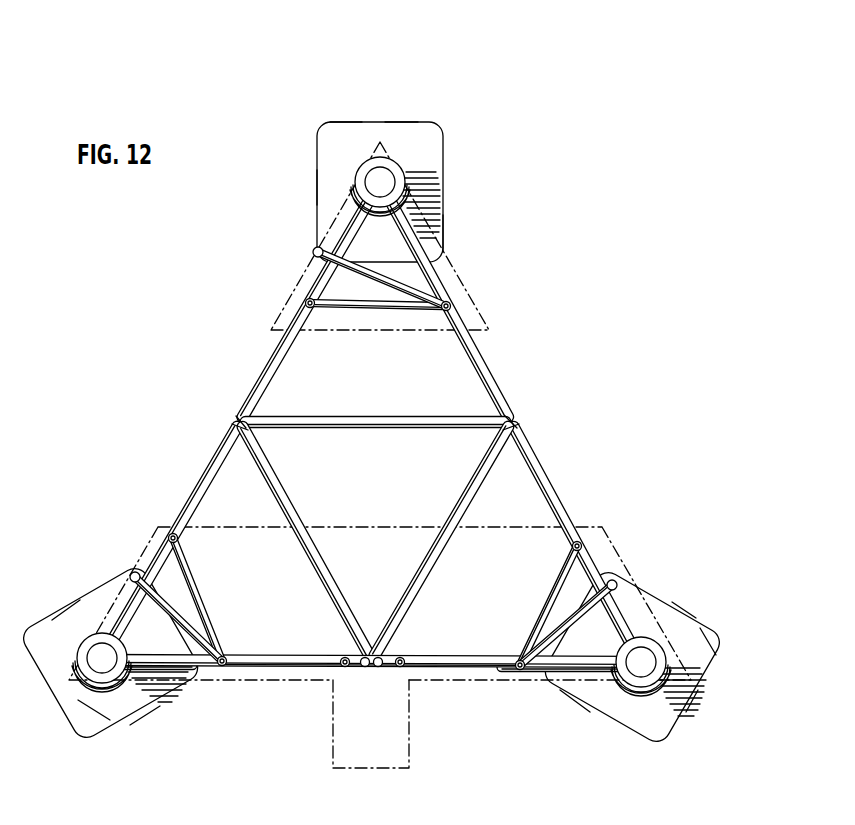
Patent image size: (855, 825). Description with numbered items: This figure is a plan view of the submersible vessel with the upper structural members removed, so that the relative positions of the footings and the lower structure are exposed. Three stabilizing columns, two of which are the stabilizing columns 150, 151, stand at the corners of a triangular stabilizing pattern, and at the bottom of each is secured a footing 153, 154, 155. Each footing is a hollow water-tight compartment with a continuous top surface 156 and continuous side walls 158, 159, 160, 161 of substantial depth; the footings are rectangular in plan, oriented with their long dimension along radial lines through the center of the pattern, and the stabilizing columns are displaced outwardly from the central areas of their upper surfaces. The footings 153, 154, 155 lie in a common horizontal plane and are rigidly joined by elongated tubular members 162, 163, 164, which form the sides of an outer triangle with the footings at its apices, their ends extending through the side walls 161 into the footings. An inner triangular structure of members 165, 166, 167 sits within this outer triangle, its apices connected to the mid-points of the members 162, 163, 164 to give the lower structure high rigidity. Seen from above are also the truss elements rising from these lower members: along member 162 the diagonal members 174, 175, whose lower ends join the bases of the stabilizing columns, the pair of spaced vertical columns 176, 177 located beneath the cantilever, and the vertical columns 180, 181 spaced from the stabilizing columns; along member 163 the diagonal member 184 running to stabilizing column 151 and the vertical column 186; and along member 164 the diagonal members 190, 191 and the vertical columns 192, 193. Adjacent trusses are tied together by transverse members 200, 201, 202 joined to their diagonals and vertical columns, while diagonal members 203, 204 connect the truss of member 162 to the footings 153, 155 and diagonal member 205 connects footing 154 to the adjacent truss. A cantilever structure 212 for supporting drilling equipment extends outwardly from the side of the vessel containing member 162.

The stabilizing column 150 is at (83, 683).
The stabilizing column 151 is at (406, 163).
The footing 153 is at (112, 725).
The footing 154 is at (444, 186).
The footing 155 is at (697, 618).
The top surface 156 is at (350, 135).
The side wall 158 is at (317, 188).
The side wall 159 is at (441, 236).
The side wall 160 is at (397, 130).
The side wall 161 is at (402, 262).
The elongated member 162 is at (310, 655).
The elongated member 163 is at (232, 428).
The elongated member 164 is at (521, 420).
The inner triangular structure member 165 is at (300, 497).
The inner triangular structure member 166 is at (400, 418).
The inner triangular structure member 167 is at (412, 562).
The diagonal member 174 is at (205, 672).
The diagonal member 175 is at (497, 663).
The vertical column 176 is at (335, 667).
The vertical column 177 is at (408, 667).
The vertical column 180 is at (232, 672).
The vertical column 181 is at (515, 673).
The diagonal member 184 is at (283, 347).
The vertical column 186 is at (303, 304).
The diagonal member 190 is at (602, 574).
The diagonal member 191 is at (482, 364).
The vertical column 192 is at (583, 544).
The vertical column 193 is at (456, 312).
The transverse member 200 is at (195, 575).
The transverse member 201 is at (400, 312).
The transverse member 202 is at (556, 580).
The diagonal member 203 is at (178, 610).
The diagonal member 204 is at (567, 600).
The diagonal member 205 is at (388, 278).
The cantilever structure 212 is at (372, 766).